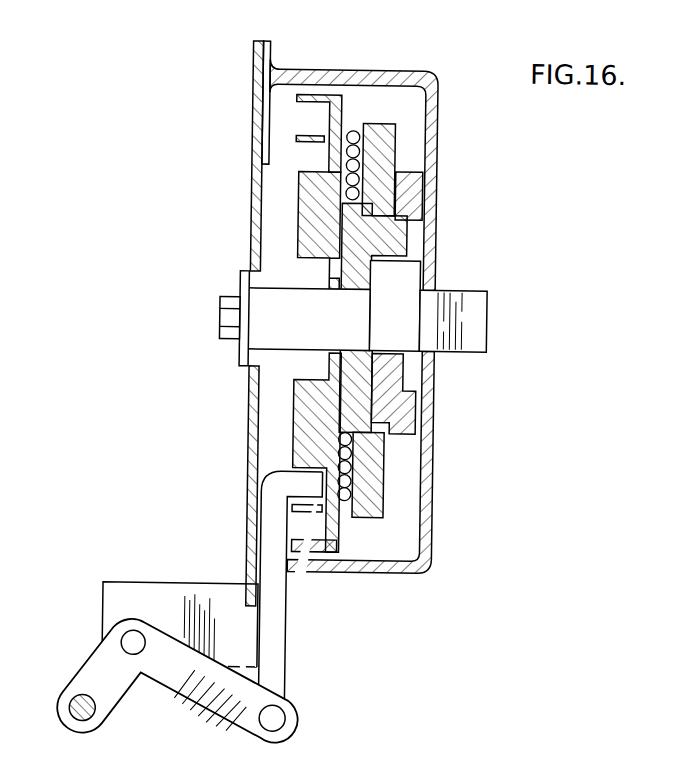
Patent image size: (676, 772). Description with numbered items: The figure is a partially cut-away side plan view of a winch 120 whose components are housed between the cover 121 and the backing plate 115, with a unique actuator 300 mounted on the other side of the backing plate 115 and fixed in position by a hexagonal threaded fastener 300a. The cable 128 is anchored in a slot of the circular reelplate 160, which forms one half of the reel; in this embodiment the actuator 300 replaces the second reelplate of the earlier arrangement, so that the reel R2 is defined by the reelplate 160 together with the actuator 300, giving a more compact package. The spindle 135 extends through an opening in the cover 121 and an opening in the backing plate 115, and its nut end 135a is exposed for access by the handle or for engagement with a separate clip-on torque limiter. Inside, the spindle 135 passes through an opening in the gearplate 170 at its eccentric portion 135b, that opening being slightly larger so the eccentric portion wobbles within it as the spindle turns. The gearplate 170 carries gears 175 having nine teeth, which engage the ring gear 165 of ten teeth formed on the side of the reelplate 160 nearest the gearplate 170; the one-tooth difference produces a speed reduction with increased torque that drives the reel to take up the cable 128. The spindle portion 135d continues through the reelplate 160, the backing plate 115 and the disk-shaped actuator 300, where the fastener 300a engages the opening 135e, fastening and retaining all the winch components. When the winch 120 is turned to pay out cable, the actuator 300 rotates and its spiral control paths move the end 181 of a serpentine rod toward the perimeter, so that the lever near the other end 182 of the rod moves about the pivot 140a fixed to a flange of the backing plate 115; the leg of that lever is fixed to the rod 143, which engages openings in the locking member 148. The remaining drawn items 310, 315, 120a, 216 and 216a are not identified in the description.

The backing plate 115 is at (252, 132).
The actuator 300 is at (353, 153).
The cover 121 is at (328, 72).
The winch 120 is at (436, 520).
The bracket 310 is at (306, 133).
The cable 128 is at (351, 130).
The reelplate 160 is at (395, 150).
The gearplate 170 is at (416, 193).
The upper bearing block 315 is at (309, 222).
The spindle 135 is at (429, 318).
The eccentric portion 135b is at (397, 316).
The spindle portion 135d is at (290, 330).
The nut end 135a is at (480, 316).
The opening 135e is at (252, 307).
The hexagonal threaded fastener 300a is at (222, 320).
The gears 175 is at (421, 404).
The ring gear 165 is at (376, 421).
The lower bearing block 120a is at (274, 389).
The rod end 181 is at (318, 487).
The locking member 148 is at (156, 604).
The pivot 140a is at (162, 681).
The rod 143 is at (83, 724).
The rod end 182 is at (276, 725).
The reel R2 is at (350, 527).
The element 216 is at (552, 757).
The element 216a is at (658, 770).